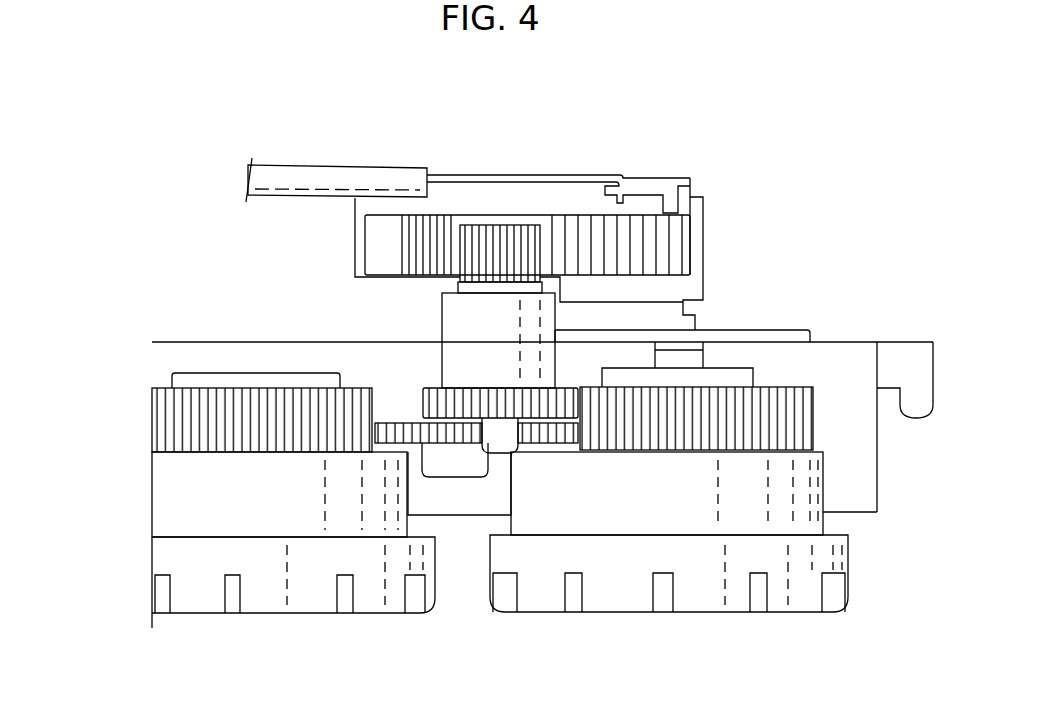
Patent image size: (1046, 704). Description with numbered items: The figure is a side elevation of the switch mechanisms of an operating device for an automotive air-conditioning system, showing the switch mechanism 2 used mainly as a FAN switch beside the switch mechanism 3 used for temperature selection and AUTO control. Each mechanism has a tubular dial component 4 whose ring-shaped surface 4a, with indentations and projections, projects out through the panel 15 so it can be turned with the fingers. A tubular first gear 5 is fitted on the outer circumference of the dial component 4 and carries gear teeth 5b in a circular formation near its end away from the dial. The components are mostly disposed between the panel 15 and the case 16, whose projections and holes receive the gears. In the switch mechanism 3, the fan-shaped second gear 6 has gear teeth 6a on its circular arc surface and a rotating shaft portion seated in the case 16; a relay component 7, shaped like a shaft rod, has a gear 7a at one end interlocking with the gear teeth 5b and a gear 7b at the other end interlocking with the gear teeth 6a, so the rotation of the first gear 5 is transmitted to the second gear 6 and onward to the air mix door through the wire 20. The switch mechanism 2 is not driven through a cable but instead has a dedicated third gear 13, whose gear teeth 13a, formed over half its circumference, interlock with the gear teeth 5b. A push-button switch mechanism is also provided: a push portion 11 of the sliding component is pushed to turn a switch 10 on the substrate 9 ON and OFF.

The switch mechanism 2 is at (127, 504).
The switch mechanism 3 is at (843, 497).
The dial component 4 is at (297, 613).
The ring-shaped surface 4a is at (350, 595).
The first gear 5 is at (152, 388).
The gear teeth 5b is at (160, 415).
The second gear 6 is at (565, 209).
The gear teeth 6a is at (660, 243).
The relay component 7 is at (442, 318).
The gear 7a is at (423, 388).
The gear 7b is at (458, 245).
The substrate 9 is at (743, 377).
The switch 10 is at (710, 347).
The push portion 11 is at (753, 373).
The third gear 13 is at (460, 477).
The gear teeth 13a is at (393, 422).
The panel 15 is at (857, 513).
The case 16 is at (933, 342).
The wire 20 is at (332, 166).